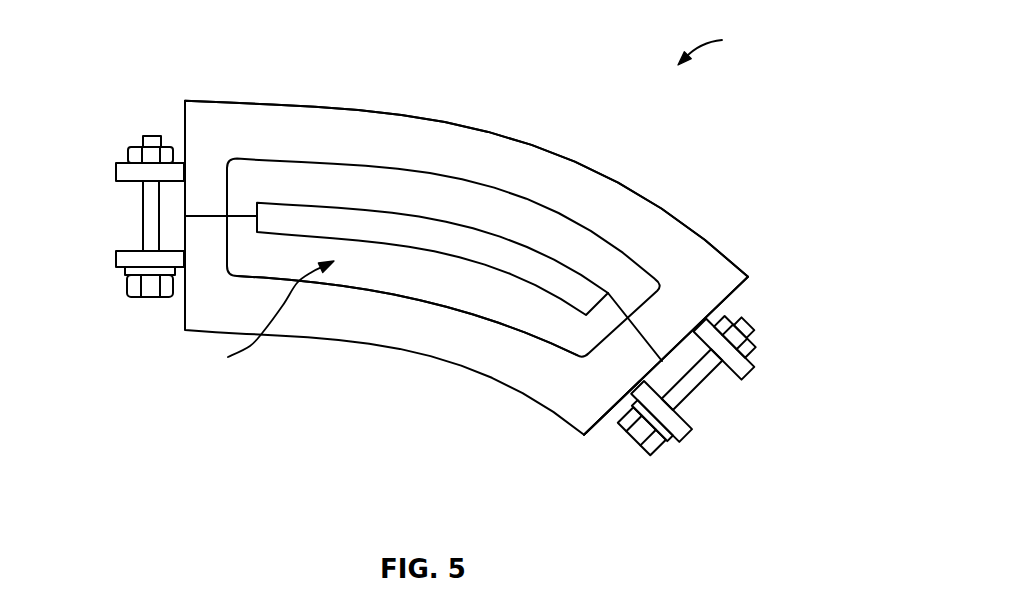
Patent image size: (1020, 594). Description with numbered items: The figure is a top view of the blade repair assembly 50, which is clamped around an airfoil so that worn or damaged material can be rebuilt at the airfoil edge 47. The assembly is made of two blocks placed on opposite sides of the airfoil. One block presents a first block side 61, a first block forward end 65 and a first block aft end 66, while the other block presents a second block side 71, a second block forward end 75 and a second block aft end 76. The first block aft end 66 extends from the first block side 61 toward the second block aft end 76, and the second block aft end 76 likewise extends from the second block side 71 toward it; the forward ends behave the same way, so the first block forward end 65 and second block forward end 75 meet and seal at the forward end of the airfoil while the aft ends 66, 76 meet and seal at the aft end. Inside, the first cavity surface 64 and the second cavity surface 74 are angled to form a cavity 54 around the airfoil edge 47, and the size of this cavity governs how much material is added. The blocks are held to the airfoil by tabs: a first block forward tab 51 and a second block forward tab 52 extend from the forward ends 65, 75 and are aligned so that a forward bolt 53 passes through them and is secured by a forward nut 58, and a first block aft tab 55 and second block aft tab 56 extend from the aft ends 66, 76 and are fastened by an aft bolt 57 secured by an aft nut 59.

The blade repair assembly 50 is at (719, 46).
The airfoil edge 47 is at (510, 258).
The first block forward tab 51 is at (118, 262).
The second block forward tab 52 is at (117, 170).
The forward bolt 53 is at (147, 210).
The cavity 54 is at (260, 316).
The first block aft tab 55 is at (680, 432).
The second block aft tab 56 is at (743, 368).
The aft bolt 57 is at (688, 388).
The forward nut 58 is at (130, 152).
The aft nut 59 is at (747, 348).
The first block side 61 is at (390, 333).
The first cavity surface 64 is at (533, 302).
The first block forward end 65 is at (563, 428).
The first block aft end 66 is at (205, 252).
The second block side 71 is at (440, 140).
The second cavity surface 74 is at (468, 205).
The second block forward end 75 is at (672, 328).
The second block aft end 76 is at (205, 180).